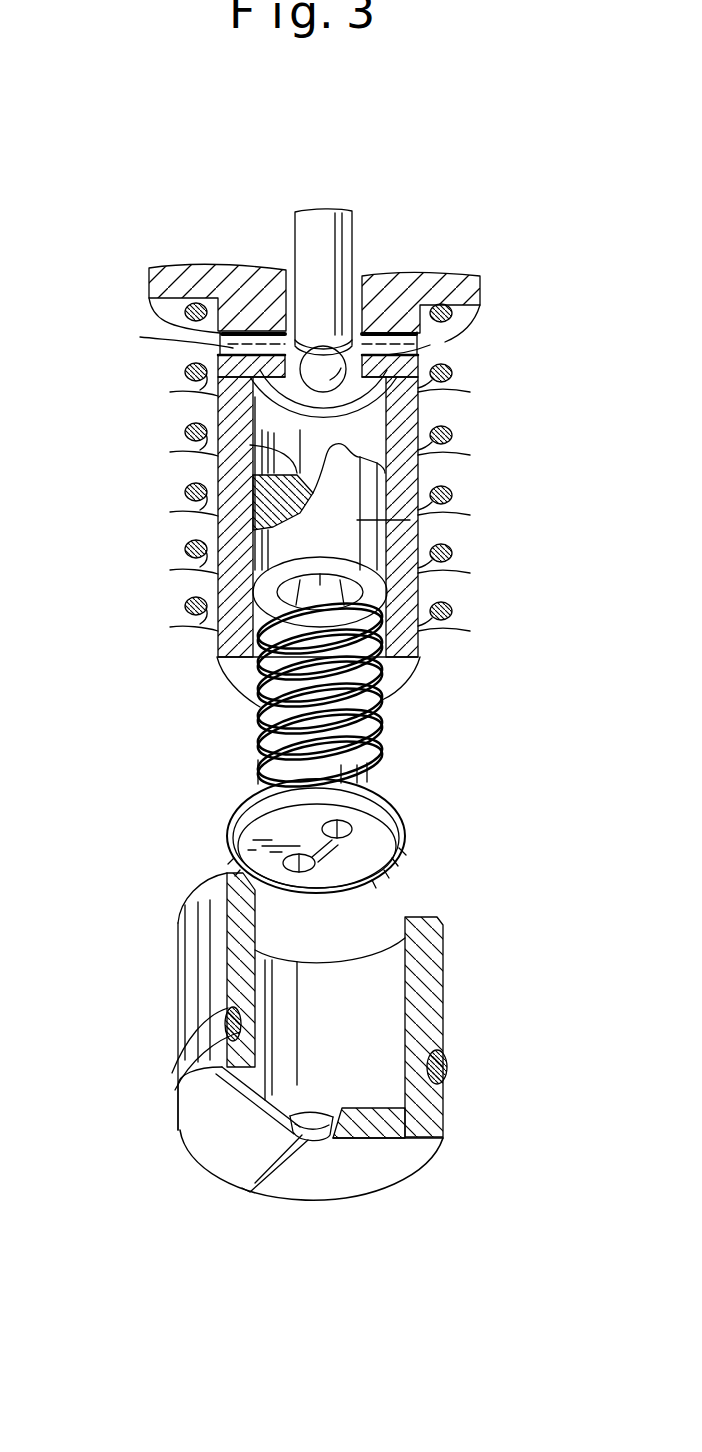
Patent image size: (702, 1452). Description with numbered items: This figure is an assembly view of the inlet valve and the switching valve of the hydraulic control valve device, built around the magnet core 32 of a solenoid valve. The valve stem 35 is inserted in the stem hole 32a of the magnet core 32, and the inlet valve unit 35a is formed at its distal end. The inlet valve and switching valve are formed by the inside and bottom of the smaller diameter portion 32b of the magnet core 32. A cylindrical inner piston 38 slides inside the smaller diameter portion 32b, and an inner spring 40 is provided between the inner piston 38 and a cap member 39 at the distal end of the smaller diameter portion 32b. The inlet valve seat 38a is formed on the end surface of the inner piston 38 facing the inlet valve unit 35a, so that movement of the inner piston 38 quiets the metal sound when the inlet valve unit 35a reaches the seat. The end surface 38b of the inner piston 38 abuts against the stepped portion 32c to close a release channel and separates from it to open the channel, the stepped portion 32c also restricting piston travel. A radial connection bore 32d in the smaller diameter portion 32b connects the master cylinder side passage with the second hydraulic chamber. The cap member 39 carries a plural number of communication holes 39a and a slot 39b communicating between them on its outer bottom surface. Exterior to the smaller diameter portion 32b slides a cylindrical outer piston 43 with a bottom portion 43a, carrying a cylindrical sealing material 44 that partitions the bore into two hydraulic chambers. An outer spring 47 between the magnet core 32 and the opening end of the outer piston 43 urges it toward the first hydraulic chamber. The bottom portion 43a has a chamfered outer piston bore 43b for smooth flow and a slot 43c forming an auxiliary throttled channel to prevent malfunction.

The magnet core 32 is at (242, 278).
The stem hole 32a is at (363, 290).
The smaller diameter portion 32b is at (232, 573).
The stepped portion 32c is at (218, 400).
The connection bore 32d is at (218, 350).
The valve stem 35 is at (322, 210).
The inlet valve unit 35a is at (395, 406).
The inner piston 38 is at (255, 538).
The inlet valve seat 38a is at (250, 450).
The end surface 38b is at (360, 519).
The cap member 39 is at (382, 786).
The communication holes 39a is at (275, 862).
The slot 39b is at (321, 850).
The inner spring 40 is at (262, 718).
The outer piston 43 is at (444, 972).
The bottom portion 43a is at (415, 1165).
The outer piston bore 43b is at (318, 1120).
The slot 43c is at (278, 1180).
The cylindrical sealing material 44 is at (447, 1072).
The outer spring 47 is at (455, 437).